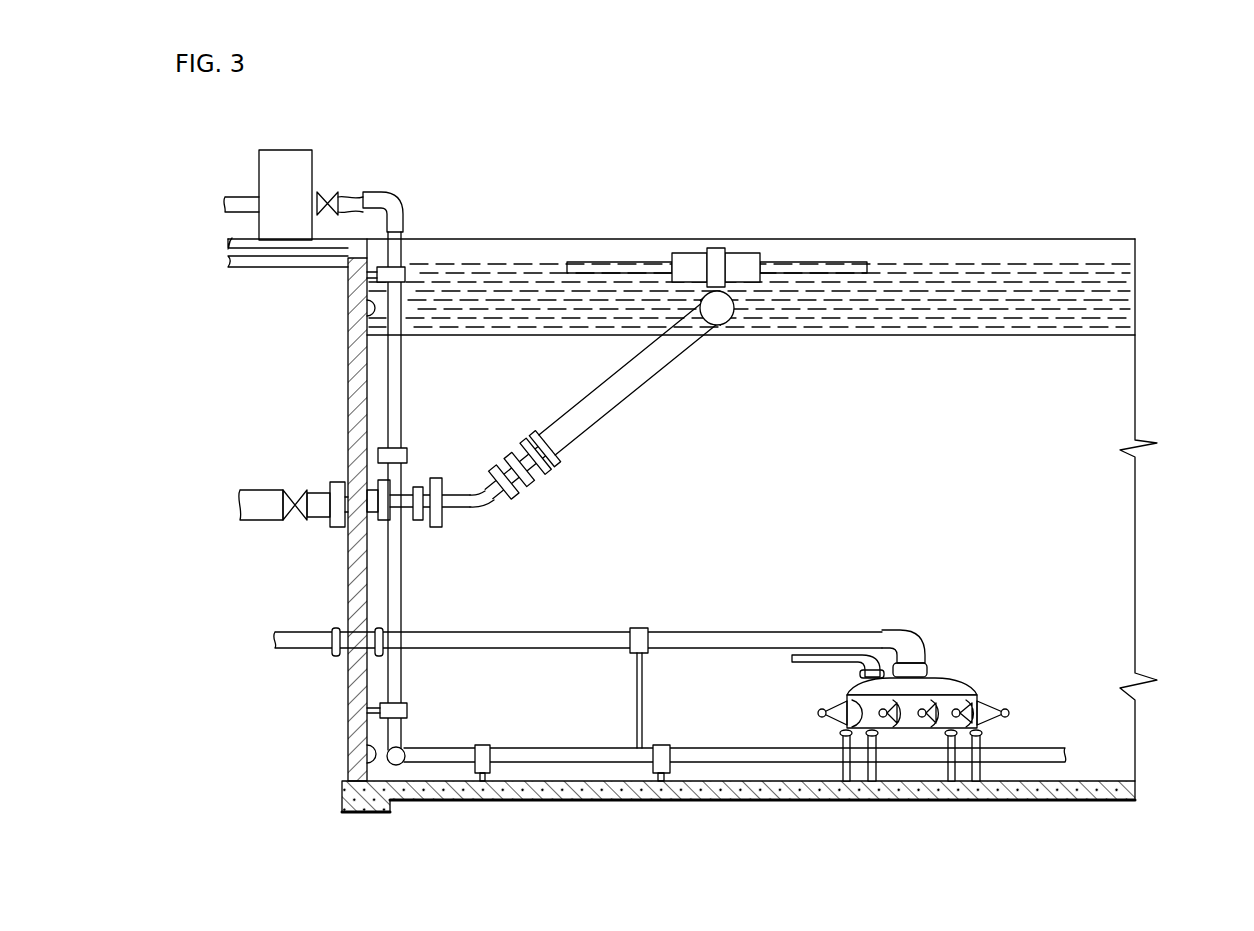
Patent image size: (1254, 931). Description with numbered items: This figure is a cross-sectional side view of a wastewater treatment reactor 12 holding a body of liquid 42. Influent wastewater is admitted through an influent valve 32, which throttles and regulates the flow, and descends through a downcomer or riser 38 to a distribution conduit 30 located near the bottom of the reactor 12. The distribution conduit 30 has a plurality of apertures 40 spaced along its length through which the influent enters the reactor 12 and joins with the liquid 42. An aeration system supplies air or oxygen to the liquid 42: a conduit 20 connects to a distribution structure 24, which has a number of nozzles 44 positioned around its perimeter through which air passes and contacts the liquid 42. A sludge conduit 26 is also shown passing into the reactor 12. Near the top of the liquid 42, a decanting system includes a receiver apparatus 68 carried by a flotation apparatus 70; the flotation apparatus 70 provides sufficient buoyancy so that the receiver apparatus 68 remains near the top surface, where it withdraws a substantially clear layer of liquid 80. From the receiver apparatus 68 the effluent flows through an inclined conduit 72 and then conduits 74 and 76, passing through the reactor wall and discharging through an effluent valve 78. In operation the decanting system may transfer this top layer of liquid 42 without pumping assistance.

The reactor 12 is at (348, 395).
The conduit 20 is at (812, 665).
The distribution structure 24 is at (958, 676).
The sludge conduit 26 is at (698, 638).
The distribution conduit 30 is at (1030, 745).
The influent valve 32 is at (330, 195).
The downcomer or riser 38 is at (404, 363).
The apertures 40 is at (557, 763).
The liquid 42 is at (1022, 489).
The nozzles 44 is at (1005, 708).
The receiver apparatus 68 is at (727, 322).
The flotation apparatus 70 is at (822, 252).
The conduit 72 is at (611, 400).
The conduit 74 is at (455, 478).
The conduit 76 is at (240, 508).
The effluent valve 78 is at (292, 524).
The substantially clear layer of liquid 80 is at (1108, 279).